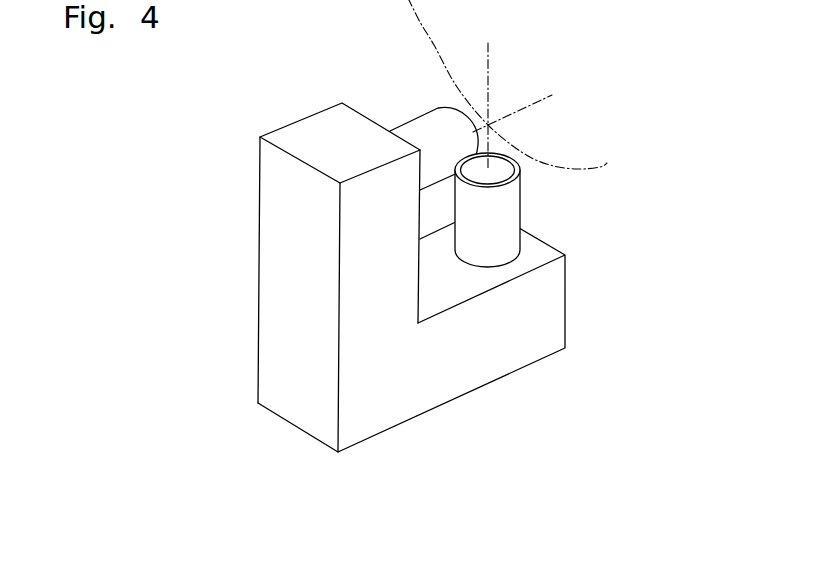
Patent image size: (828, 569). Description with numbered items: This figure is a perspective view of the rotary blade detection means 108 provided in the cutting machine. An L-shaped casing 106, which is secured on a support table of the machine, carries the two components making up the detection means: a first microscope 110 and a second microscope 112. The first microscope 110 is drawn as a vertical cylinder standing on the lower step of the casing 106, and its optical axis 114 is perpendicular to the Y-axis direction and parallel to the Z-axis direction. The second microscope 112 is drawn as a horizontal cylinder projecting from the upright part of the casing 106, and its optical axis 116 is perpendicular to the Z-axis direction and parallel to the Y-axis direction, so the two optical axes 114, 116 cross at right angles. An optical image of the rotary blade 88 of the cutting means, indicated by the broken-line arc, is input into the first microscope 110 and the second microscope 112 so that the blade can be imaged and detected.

The rotary blade 88 is at (605, 165).
The L-shaped casing 106 is at (442, 405).
The rotary blade detection means 108 is at (247, 147).
The first microscope 110 is at (522, 197).
The second microscope 112 is at (420, 114).
The optical axis 114 is at (490, 67).
The optical axis 116 is at (537, 105).